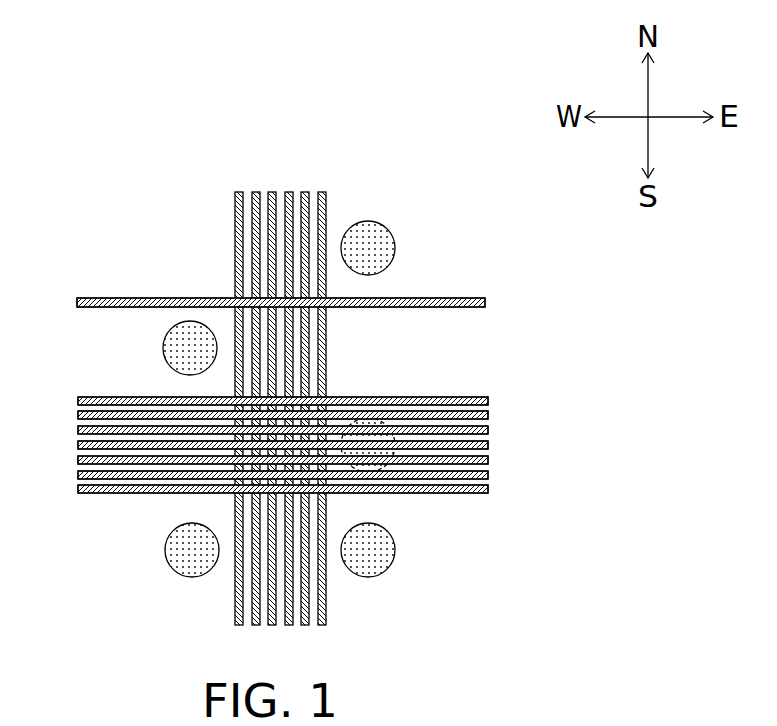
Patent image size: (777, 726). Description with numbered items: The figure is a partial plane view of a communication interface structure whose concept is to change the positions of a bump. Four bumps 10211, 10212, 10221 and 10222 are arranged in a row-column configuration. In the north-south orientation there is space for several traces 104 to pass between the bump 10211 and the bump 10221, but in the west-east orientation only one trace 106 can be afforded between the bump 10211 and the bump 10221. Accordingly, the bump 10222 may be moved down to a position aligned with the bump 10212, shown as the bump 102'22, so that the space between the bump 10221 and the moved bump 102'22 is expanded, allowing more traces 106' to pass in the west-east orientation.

The traces 104 is at (327, 190).
The trace 106 is at (323, 300).
The traces 106' is at (247, 445).
The bump 10211 is at (163, 347).
The bump 10212 is at (165, 549).
The bump 10221 is at (387, 229).
The bump 10222 is at (403, 393).
The bump 102'22 is at (440, 550).